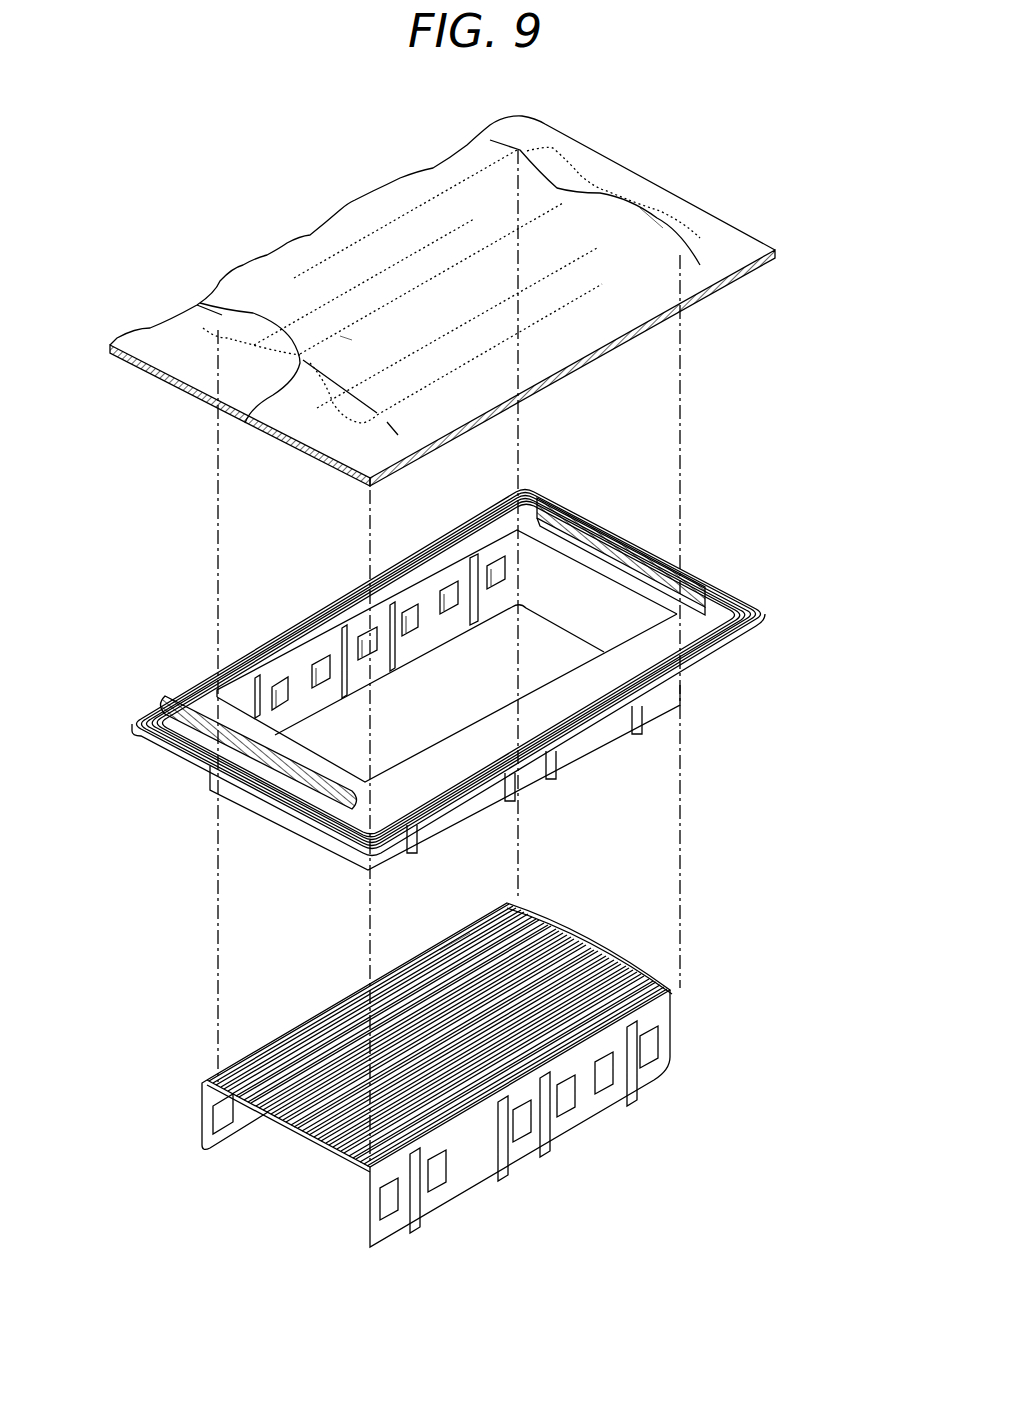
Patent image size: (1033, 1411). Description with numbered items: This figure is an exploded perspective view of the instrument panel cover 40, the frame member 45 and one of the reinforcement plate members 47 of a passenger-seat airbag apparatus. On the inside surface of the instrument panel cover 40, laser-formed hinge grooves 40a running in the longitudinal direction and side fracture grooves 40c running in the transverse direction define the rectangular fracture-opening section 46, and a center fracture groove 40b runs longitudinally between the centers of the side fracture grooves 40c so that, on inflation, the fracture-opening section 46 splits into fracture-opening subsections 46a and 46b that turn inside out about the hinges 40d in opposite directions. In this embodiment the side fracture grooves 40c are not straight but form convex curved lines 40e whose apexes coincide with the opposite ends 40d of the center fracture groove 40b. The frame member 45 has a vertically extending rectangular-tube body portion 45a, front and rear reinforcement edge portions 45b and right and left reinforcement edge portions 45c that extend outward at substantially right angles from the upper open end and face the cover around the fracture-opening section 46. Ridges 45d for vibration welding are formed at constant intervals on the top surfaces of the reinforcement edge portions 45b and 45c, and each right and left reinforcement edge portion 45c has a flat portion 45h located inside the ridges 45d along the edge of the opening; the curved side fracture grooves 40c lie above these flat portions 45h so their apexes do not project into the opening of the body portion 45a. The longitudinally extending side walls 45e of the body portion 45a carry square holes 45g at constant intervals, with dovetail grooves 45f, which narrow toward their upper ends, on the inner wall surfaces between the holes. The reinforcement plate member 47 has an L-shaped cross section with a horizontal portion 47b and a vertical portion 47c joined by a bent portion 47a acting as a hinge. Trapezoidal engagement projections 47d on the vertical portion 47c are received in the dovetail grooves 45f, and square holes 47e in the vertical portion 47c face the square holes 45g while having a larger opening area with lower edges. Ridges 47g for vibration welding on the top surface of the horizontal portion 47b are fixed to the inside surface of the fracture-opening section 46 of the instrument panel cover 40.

The instrument panel cover 40 is at (464, 285).
The hinge grooves 40a is at (297, 277).
The center fracture groove 40b is at (350, 337).
The side fracture grooves 40c is at (663, 215).
The hinges 40d is at (610, 191).
The convex curved lines 40e is at (613, 195).
The fracture-opening section 46 is at (428, 251).
The fracture-opening subsection 46a is at (383, 267).
The fracture-opening subsection 46b is at (483, 313).
The frame member 45 is at (447, 670).
The body portion 45a is at (290, 815).
The front and rear reinforcement edge portions 45b is at (185, 675).
The right and left reinforcement edge portions 45c is at (160, 735).
The ridges 45d is at (603, 510).
The side walls 45e is at (590, 755).
The dovetail grooves 45f is at (480, 605).
The square holes 45g is at (407, 623).
The flat portion 45h is at (495, 611).
The reinforcement plate member 47 is at (429, 1069).
The bent portion 47a is at (403, 960).
The horizontal portion 47b is at (303, 1037).
The vertical portion 47c is at (220, 1140).
The engagement projections 47d is at (547, 1157).
The square holes 47e is at (517, 1180).
The ridges 47g is at (573, 923).